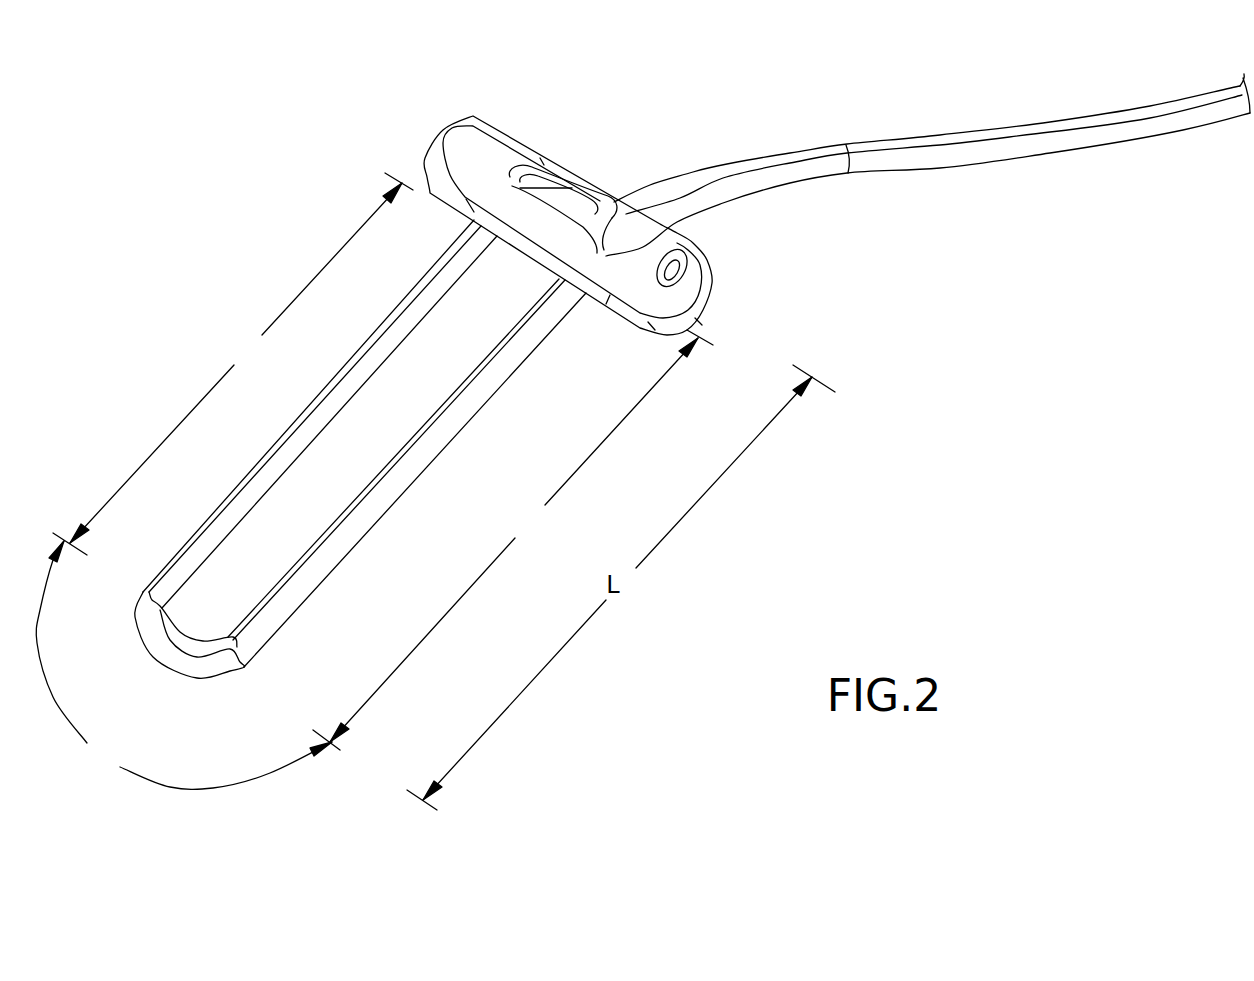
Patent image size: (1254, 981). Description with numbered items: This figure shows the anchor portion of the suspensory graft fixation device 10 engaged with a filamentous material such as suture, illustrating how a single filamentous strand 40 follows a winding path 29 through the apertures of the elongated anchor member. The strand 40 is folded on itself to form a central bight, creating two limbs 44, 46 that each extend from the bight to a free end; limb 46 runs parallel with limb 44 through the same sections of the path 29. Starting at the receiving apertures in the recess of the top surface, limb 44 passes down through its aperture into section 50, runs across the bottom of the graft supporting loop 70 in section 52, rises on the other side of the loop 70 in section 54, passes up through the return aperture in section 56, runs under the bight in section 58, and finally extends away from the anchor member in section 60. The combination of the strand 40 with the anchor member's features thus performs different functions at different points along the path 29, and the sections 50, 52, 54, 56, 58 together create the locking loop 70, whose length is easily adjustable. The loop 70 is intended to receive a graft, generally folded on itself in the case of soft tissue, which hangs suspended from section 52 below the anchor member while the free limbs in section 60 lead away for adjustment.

The suspensory graft fixation device 10 is at (197, 270).
The path 29 is at (553, 315).
The filamentous strand 40 is at (1160, 142).
The limb 44 is at (757, 160).
The limb 46 is at (762, 173).
The section 50 is at (513, 540).
The section 52 is at (184, 665).
The section 54 is at (233, 364).
The section 56 is at (567, 195).
The section 58 is at (677, 255).
The section 60 is at (1022, 158).
The graft supporting loop 70 is at (305, 455).